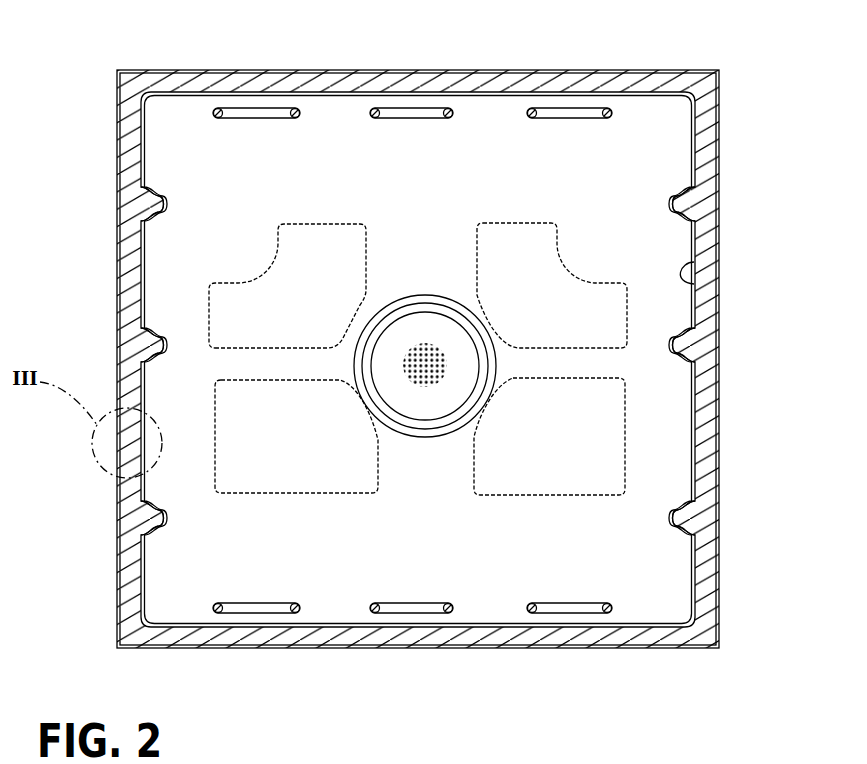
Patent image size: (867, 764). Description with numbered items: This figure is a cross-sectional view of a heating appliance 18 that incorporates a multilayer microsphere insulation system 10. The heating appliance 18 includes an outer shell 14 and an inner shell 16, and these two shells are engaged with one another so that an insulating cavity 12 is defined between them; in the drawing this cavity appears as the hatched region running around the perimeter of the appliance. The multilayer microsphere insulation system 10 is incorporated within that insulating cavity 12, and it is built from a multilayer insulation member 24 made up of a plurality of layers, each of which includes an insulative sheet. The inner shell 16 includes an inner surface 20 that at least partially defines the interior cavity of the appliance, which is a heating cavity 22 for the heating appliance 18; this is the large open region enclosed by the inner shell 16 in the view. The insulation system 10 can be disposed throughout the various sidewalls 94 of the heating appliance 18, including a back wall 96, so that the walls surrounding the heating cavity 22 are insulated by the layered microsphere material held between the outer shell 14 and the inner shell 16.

The multilayer microsphere insulation system 10 is at (720, 131).
The insulating cavity 12 is at (703, 235).
The outer shell 14 is at (417, 72).
The inner shell 16 is at (141, 137).
The heating appliance 18 is at (735, 408).
The inner surface 20 is at (694, 262).
The heating cavity 22 is at (347, 148).
The multilayer insulation member 24 is at (130, 256).
The sidewalls 94 is at (718, 182).
The back wall 96 is at (640, 130).